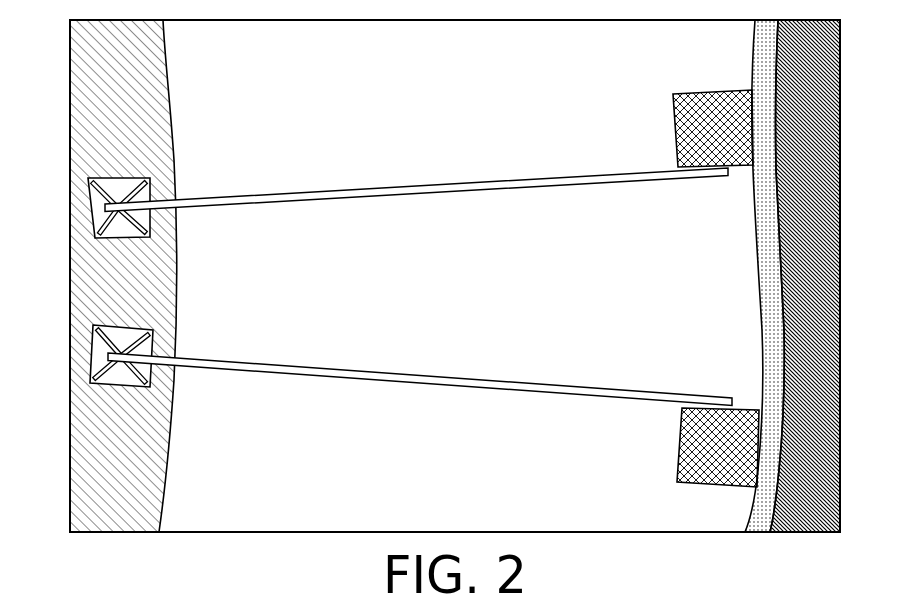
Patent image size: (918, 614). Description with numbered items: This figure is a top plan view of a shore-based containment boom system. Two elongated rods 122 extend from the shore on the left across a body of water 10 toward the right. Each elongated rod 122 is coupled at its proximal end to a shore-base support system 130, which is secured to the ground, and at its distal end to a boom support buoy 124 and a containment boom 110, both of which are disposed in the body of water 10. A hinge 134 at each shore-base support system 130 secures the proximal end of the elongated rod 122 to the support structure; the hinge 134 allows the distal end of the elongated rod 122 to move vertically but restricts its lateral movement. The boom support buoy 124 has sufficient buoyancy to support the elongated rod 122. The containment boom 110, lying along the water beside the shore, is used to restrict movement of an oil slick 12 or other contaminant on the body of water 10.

The body of water 10 is at (450, 281).
The oil slick 12 is at (792, 265).
The containment boom 110 is at (753, 61).
The elongated rod 122 is at (413, 186).
The boom support buoy 124 is at (741, 91).
The shore-base support system 130 is at (98, 210).
The hinge 134 is at (90, 180).